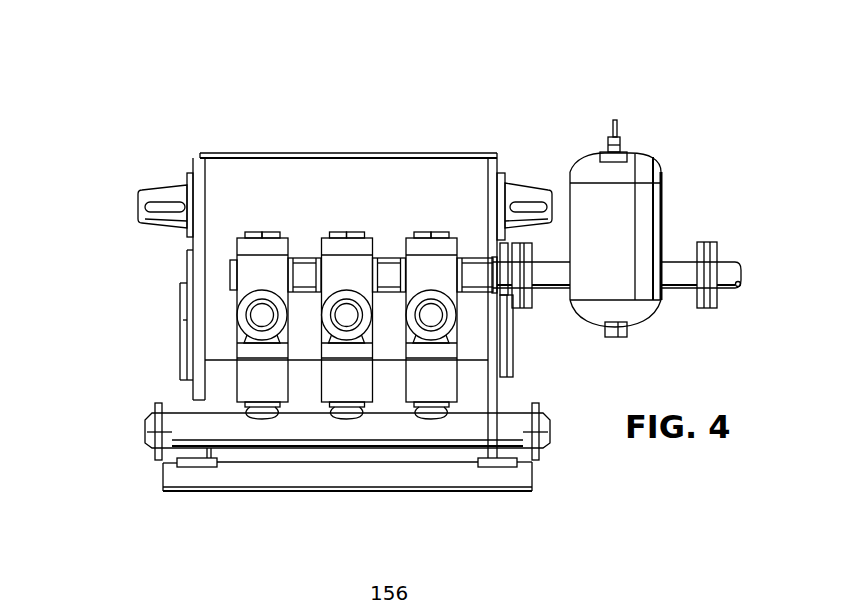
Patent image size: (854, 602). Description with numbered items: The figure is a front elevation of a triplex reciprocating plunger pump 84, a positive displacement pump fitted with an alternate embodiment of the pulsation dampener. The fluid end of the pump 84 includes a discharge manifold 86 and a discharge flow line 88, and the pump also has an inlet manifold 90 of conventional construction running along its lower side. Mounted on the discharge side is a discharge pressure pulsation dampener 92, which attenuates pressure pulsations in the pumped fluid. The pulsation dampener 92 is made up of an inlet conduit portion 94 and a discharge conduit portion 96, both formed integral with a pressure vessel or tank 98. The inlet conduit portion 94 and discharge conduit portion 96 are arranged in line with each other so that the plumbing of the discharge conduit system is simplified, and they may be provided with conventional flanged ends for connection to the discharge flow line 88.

The triplex reciprocating plunger pump 84 is at (350, 152).
The discharge manifold 86 is at (425, 258).
The discharge flow line 88 is at (514, 306).
The inlet manifold 90 is at (427, 430).
The discharge pressure pulsation dampener 92 is at (672, 212).
The inlet conduit portion 94 is at (558, 284).
The discharge conduit portion 96 is at (673, 290).
The pressure vessel or tank 98 is at (580, 211).